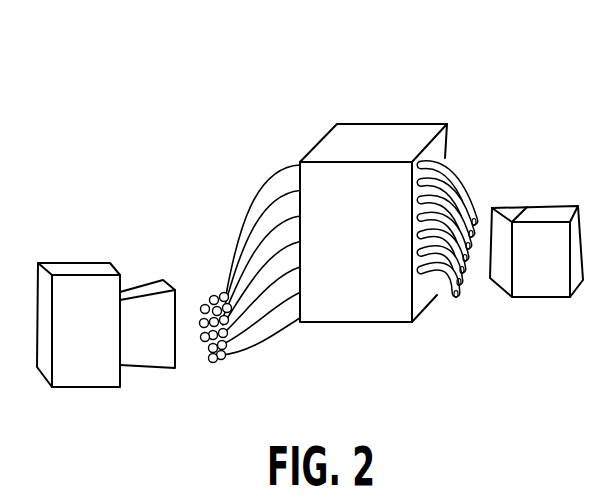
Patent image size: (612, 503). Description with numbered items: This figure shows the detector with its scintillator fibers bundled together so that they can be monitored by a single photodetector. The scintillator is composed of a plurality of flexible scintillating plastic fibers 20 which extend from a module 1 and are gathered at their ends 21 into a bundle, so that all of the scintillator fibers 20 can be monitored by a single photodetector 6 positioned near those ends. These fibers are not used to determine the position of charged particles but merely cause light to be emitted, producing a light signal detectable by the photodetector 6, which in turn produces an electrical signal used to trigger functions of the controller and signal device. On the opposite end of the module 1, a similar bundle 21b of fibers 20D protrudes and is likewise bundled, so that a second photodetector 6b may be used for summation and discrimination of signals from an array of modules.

The module 1 is at (392, 112).
The scintillator fibers 20 is at (263, 183).
The ends 21 is at (217, 292).
The fibers 20D is at (458, 186).
The bundle 21b is at (445, 297).
The photodetector 6 is at (95, 367).
The photodetector 6b is at (548, 287).